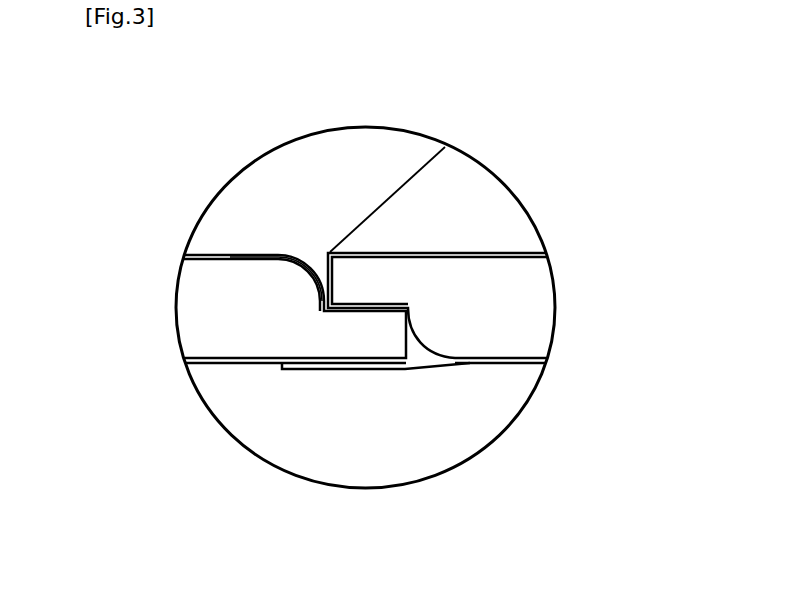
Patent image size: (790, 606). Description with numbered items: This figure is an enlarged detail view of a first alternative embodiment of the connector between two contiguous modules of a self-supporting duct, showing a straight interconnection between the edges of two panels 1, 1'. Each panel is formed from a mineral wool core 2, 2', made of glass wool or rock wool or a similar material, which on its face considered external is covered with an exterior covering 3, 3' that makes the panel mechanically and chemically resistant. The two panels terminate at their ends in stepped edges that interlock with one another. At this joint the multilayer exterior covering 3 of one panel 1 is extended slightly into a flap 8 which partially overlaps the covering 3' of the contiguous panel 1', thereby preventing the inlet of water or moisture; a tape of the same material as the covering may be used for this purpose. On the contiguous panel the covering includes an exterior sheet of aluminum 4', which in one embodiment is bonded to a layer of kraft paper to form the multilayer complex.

The panel 1 is at (438, 252).
The panel 1' is at (295, 244).
The mineral wool core 2 is at (481, 312).
The mineral wool core 2' is at (206, 311).
The exterior covering 3 is at (513, 423).
The exterior covering 3' is at (274, 421).
The sheet of aluminum 4' is at (292, 175).
The flap 8 is at (338, 370).